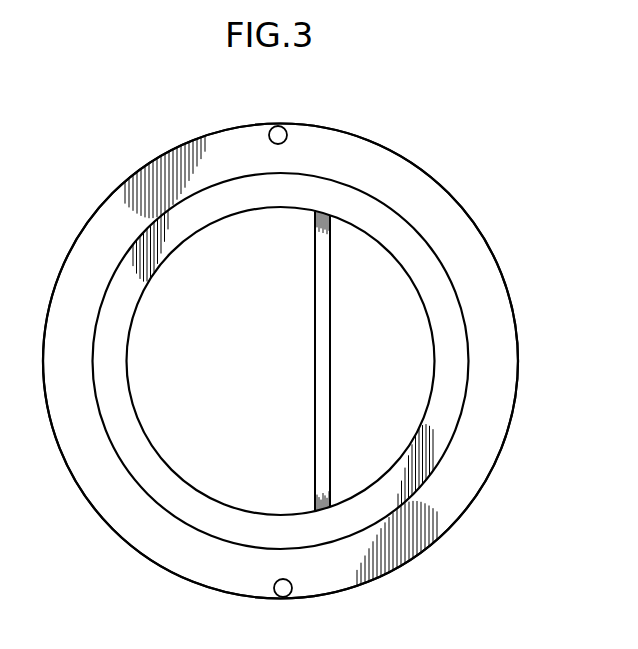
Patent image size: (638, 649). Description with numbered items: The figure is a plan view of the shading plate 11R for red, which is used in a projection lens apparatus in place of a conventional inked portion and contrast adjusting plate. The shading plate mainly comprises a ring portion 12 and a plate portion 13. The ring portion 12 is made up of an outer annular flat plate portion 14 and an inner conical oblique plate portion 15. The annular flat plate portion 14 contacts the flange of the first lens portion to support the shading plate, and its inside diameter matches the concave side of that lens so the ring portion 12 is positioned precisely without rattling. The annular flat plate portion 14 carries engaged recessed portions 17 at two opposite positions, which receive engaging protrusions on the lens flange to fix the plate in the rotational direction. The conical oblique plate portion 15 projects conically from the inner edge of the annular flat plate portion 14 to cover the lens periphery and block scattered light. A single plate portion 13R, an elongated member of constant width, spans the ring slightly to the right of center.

The shading plate for red 11R is at (482, 150).
The ring portion 12 is at (484, 237).
The plate portion 13 is at (305, 387).
The plate portion 13R is at (324, 329).
The annular flat plate portion 14 is at (490, 290).
The conical oblique plate portion 15 is at (456, 351).
The engaged recessed portions 17 is at (281, 126).